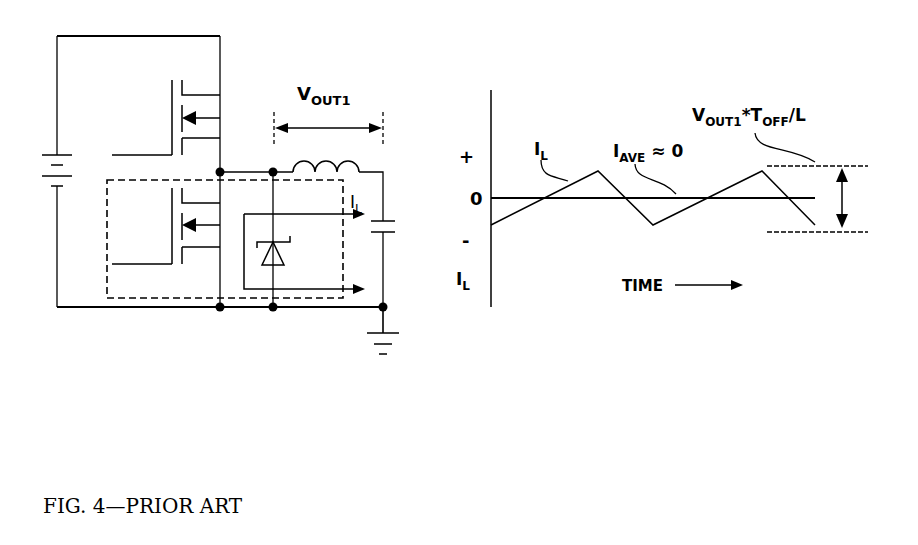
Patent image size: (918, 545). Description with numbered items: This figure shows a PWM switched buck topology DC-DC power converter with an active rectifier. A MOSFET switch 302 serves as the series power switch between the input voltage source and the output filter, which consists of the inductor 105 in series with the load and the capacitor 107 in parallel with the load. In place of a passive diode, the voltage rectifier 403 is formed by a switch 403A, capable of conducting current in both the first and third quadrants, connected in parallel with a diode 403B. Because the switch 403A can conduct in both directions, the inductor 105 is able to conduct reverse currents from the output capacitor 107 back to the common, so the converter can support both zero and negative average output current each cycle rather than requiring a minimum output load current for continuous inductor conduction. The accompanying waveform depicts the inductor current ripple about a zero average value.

The MOSFET switch 302 is at (166, 117).
The voltage rectifier 403 is at (128, 298).
The switch 403A is at (166, 226).
The diode 403B is at (304, 251).
The inductor 105 is at (326, 155).
The capacitor 107 is at (402, 226).